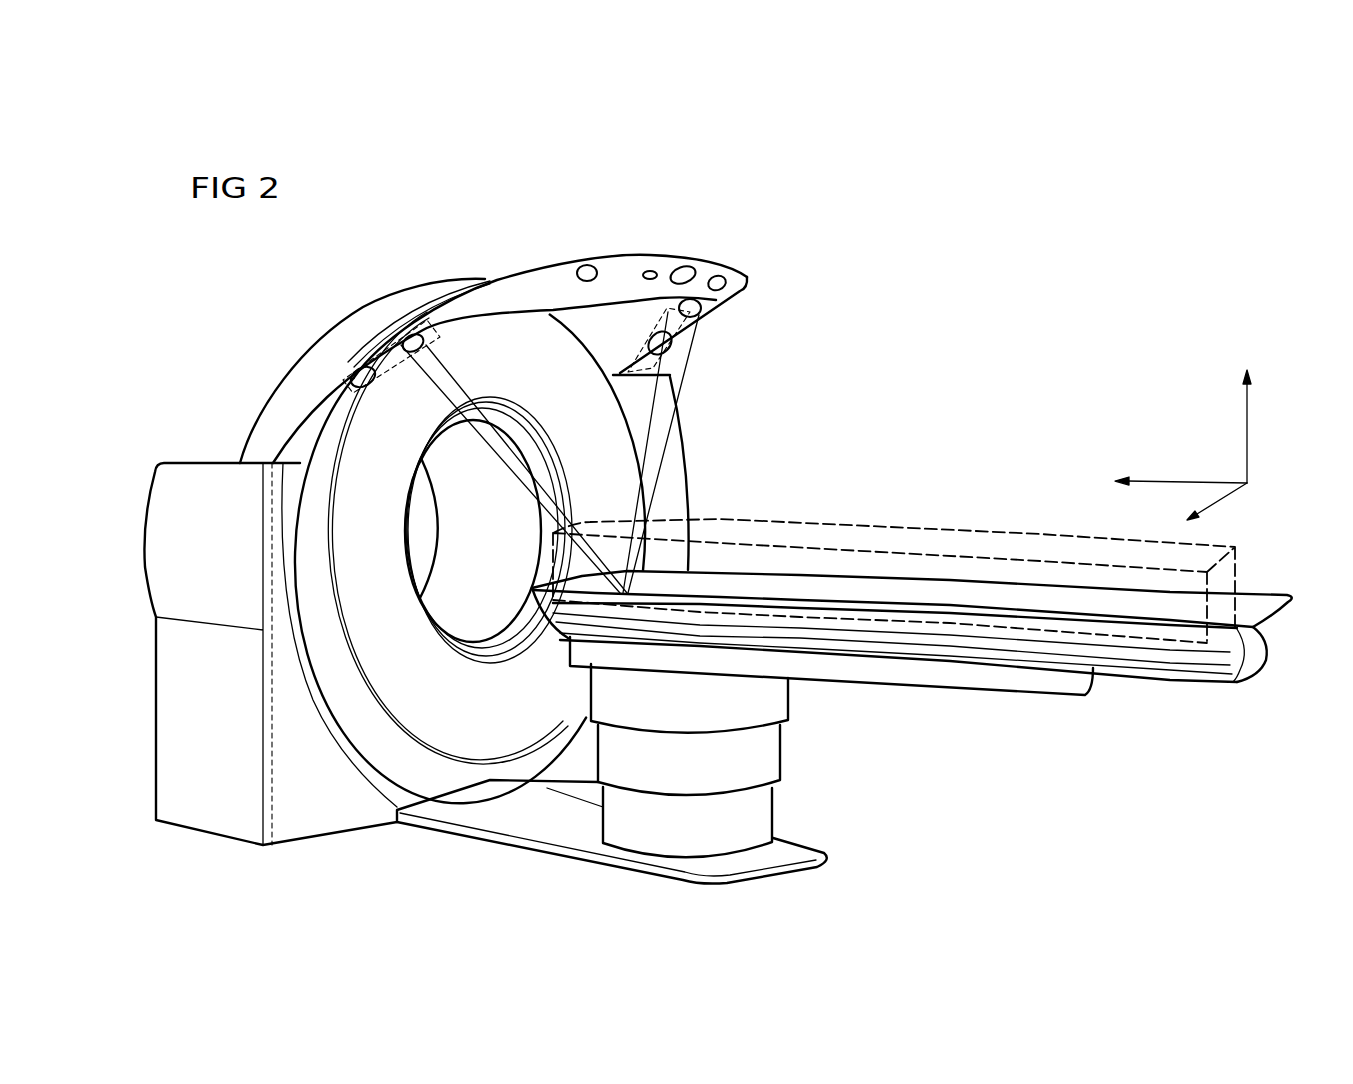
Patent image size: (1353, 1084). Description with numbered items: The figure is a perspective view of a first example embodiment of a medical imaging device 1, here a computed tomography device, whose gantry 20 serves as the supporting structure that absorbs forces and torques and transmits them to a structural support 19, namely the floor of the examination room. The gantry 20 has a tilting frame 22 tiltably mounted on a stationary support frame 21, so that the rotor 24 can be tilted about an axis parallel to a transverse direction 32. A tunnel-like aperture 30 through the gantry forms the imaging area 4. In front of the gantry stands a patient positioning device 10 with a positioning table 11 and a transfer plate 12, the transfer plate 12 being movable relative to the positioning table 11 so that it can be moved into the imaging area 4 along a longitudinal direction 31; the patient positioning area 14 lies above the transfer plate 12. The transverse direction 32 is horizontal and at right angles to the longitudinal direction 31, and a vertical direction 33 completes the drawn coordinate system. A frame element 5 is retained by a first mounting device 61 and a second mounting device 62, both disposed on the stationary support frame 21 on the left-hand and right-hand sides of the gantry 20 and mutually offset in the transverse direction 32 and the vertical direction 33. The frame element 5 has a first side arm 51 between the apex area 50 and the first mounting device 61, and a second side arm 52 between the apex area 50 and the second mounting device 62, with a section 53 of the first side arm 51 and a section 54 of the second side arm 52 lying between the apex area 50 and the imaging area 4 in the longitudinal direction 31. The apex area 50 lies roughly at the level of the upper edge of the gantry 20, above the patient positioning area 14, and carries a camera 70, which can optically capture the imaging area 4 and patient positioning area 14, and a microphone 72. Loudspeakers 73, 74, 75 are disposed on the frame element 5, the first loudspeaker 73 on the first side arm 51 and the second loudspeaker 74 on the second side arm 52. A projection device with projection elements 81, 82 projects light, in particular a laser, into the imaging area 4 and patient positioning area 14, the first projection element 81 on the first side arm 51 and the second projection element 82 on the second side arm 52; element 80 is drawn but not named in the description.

The medical imaging device 1 is at (1010, 295).
The imaging area 4 is at (491, 551).
The frame element 5 is at (495, 382).
The patient positioning device 10 is at (912, 613).
The positioning table 11 is at (768, 763).
The transfer plate 12 is at (1083, 603).
The patient positioning area 14 is at (1003, 540).
The structural support 19 is at (612, 866).
The gantry 20 is at (354, 617).
The stationary support frame 21 is at (185, 742).
The tilting frame 22 is at (482, 601).
The rotor 24 is at (433, 718).
The tunnel-like aperture 30 is at (462, 613).
The longitudinal direction 31 is at (1170, 480).
The transverse direction 32 is at (1215, 503).
The vertical direction 33 is at (1250, 400).
The apex area 50 is at (662, 263).
The first side arm 51 is at (665, 372).
The second side arm 52 is at (328, 400).
The section of the first side arm 53 is at (658, 312).
The section of the second side arm 54 is at (407, 337).
The first mounting device 61 is at (627, 383).
The second mounting device 62 is at (280, 458).
The camera 70 is at (690, 272).
The microphone 72 is at (650, 270).
The first loudspeaker 73 is at (653, 345).
The second loudspeaker 74 is at (355, 370).
The loudspeaker 75 is at (720, 282).
The light source 80 is at (584, 267).
The first projection element 81 is at (702, 310).
The second projection element 82 is at (400, 333).